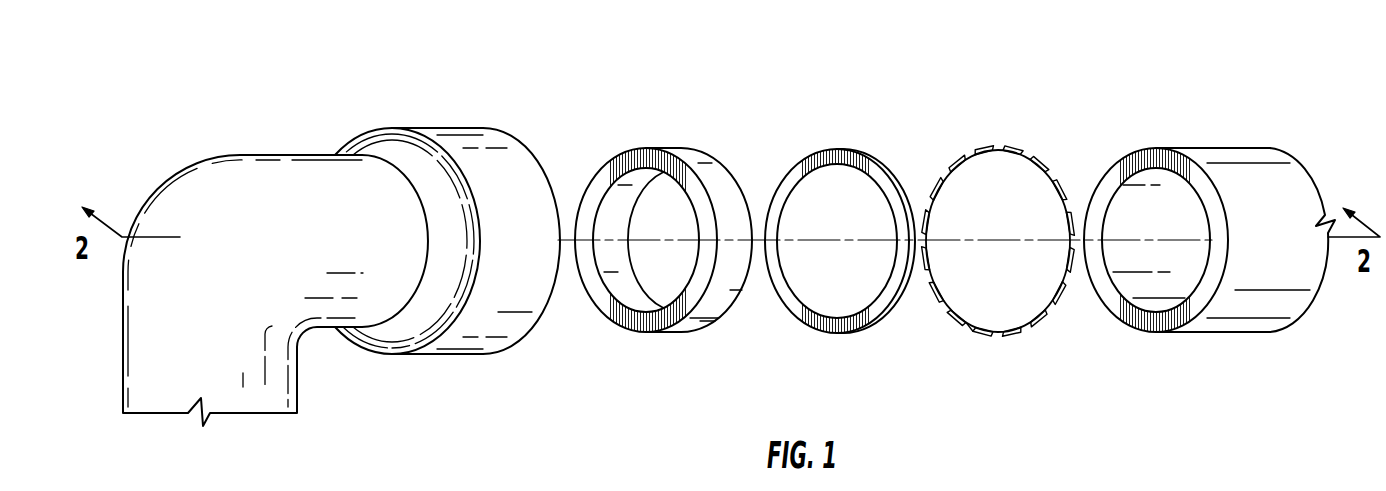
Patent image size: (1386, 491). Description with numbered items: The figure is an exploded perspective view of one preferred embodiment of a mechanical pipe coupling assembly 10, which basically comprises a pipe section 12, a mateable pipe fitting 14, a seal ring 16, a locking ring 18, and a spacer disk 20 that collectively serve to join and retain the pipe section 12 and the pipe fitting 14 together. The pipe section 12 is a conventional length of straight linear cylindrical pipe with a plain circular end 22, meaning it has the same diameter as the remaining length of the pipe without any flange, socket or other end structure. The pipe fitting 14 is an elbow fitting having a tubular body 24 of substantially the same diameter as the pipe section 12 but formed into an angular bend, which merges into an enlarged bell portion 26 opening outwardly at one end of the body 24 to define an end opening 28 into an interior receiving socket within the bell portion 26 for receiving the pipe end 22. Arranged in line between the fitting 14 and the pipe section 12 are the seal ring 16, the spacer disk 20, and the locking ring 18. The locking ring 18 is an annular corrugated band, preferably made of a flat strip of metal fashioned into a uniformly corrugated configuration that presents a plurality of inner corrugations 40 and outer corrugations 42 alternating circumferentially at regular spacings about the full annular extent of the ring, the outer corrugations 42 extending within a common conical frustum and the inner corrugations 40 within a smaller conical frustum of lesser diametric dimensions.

The mechanical pipe coupling assembly 10 is at (1160, 90).
The pipe section 12 is at (1201, 236).
The pipe fitting 14 is at (303, 154).
The seal ring 16 is at (673, 152).
The locking ring 18 is at (998, 241).
The spacer disk 20 is at (827, 147).
The plain circular end 22 is at (1123, 323).
The tubular body 24 is at (275, 267).
The bell portion 26 is at (457, 241).
The end opening 28 is at (547, 183).
The inner corrugations 40 is at (956, 313).
The outer corrugations 42 is at (982, 332).